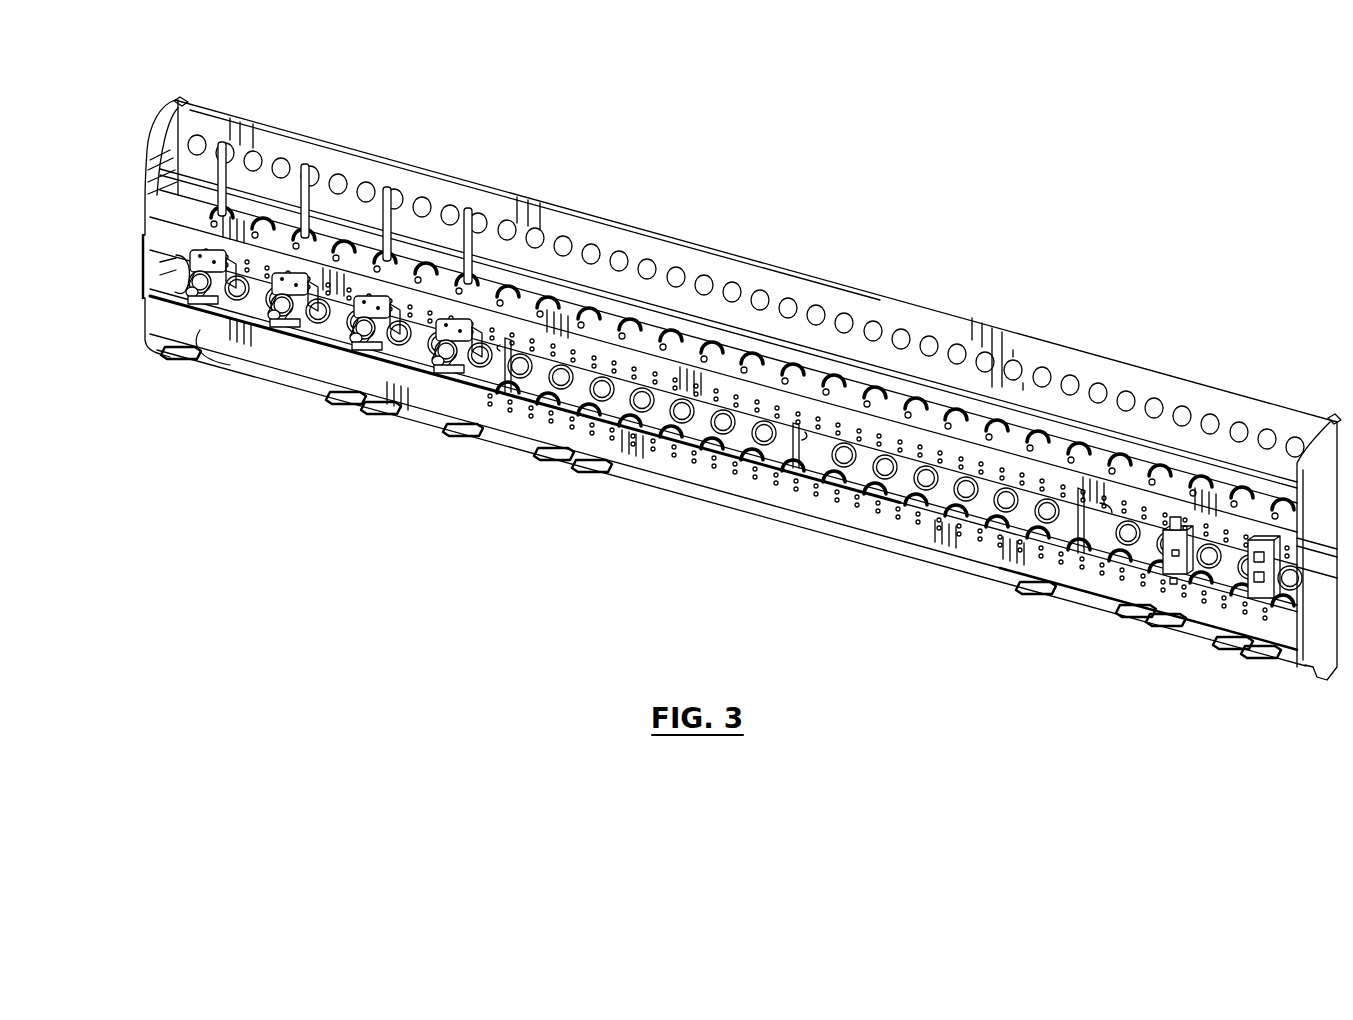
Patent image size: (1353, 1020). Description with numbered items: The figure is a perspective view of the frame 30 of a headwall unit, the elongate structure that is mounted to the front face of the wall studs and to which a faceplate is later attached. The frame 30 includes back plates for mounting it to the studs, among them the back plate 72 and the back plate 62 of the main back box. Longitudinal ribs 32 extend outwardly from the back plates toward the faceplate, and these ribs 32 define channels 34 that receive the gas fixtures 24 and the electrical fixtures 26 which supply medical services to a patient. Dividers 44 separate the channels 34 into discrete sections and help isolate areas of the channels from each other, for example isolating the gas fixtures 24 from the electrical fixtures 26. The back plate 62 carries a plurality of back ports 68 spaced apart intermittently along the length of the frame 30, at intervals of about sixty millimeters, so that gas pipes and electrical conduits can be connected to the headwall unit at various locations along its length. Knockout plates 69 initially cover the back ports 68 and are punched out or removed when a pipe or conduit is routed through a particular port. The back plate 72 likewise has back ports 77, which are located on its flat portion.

The frame 30 is at (1028, 301).
The back plate 72 is at (190, 127).
The back ports 77 is at (1183, 413).
The channels 34 is at (662, 295).
The longitudinal ribs 32 is at (191, 218).
The back plate 62 is at (188, 260).
The gas fixtures 24 is at (199, 308).
The dividers 44 is at (490, 360).
The back ports 68 is at (838, 476).
The knockout plates 69 is at (843, 462).
The electrical fixtures 26 is at (1175, 566).